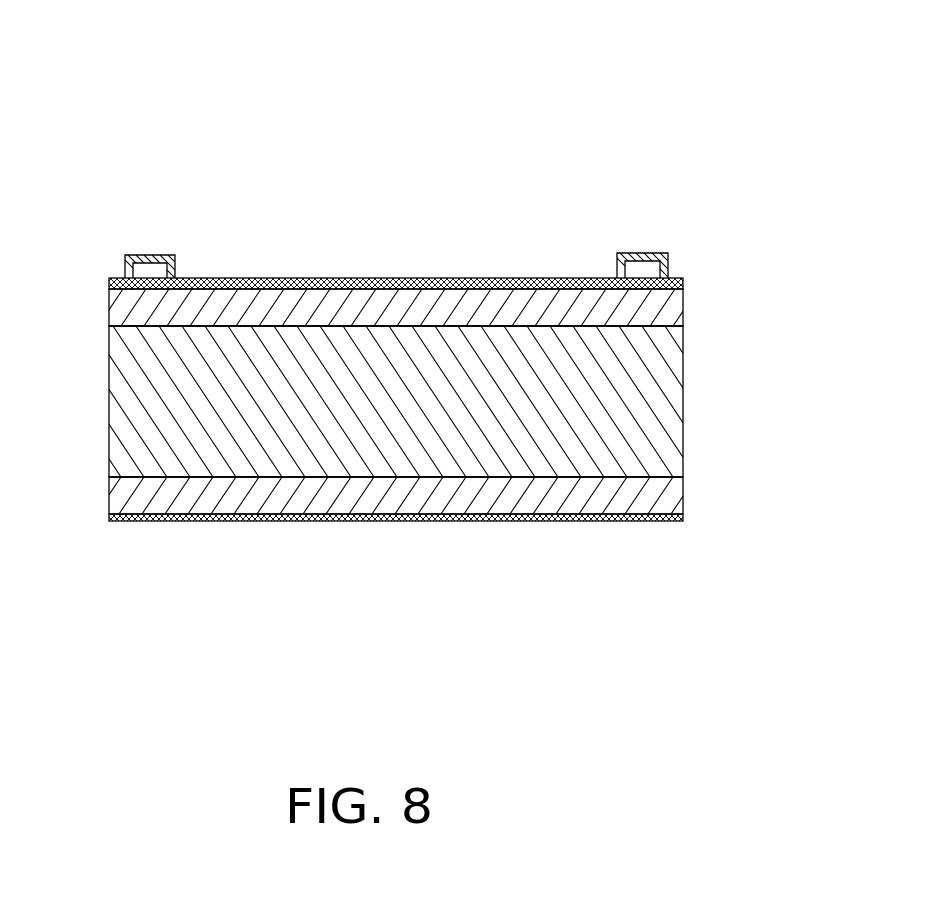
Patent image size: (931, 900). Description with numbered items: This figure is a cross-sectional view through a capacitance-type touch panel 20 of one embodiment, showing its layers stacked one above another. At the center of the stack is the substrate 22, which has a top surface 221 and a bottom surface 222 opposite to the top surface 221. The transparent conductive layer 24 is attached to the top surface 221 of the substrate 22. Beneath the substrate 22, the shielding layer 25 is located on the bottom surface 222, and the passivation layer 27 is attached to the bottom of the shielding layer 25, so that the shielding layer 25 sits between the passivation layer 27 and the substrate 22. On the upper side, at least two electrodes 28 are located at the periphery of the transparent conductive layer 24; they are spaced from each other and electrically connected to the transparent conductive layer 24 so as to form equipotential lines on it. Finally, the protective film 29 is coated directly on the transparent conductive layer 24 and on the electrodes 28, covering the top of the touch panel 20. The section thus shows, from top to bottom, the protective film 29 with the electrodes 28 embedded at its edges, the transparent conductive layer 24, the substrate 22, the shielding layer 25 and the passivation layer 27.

The touch panel 20 is at (403, 40).
The substrate 22 is at (627, 418).
The top surface 221 is at (190, 327).
The bottom surface 222 is at (190, 477).
The transparent conductive layer 24 is at (650, 311).
The shielding layer 25 is at (538, 490).
The passivation layer 27 is at (109, 518).
The electrodes 28 is at (143, 254).
The protective film 29 is at (270, 279).